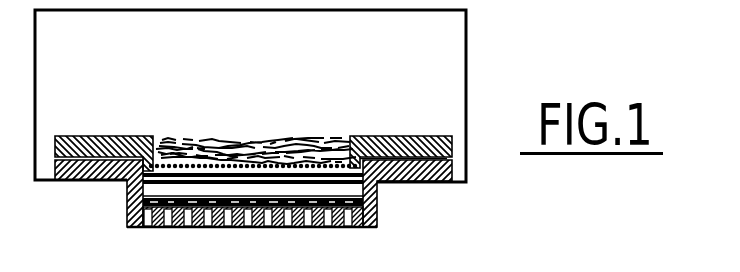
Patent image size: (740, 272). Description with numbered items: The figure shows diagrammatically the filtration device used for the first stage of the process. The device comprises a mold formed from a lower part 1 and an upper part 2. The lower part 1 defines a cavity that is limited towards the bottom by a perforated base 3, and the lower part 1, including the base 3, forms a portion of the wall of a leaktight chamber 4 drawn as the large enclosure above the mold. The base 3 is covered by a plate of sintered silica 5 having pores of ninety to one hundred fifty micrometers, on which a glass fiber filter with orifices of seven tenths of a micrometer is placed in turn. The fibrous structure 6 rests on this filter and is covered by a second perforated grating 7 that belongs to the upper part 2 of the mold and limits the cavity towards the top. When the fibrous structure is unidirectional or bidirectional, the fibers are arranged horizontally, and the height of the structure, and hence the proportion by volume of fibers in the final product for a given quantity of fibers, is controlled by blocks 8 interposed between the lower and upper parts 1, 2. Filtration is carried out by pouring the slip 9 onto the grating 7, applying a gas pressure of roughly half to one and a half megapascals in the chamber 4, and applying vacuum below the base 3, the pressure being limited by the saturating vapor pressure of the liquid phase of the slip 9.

The lower part 1 is at (398, 203).
The upper part 2 is at (129, 128).
The perforated base 3 is at (217, 228).
The leaktight chamber 4 is at (471, 66).
The plate of sintered silica 5 is at (307, 228).
The fibrous structure 6 is at (127, 200).
The second perforated grating 7 is at (194, 153).
The blocks 8 is at (443, 181).
The slip 9 is at (287, 136).